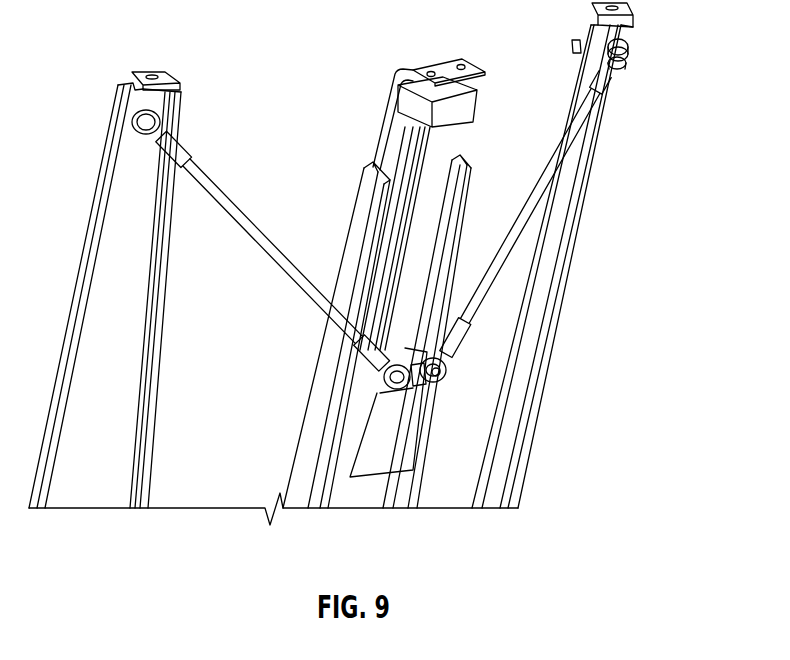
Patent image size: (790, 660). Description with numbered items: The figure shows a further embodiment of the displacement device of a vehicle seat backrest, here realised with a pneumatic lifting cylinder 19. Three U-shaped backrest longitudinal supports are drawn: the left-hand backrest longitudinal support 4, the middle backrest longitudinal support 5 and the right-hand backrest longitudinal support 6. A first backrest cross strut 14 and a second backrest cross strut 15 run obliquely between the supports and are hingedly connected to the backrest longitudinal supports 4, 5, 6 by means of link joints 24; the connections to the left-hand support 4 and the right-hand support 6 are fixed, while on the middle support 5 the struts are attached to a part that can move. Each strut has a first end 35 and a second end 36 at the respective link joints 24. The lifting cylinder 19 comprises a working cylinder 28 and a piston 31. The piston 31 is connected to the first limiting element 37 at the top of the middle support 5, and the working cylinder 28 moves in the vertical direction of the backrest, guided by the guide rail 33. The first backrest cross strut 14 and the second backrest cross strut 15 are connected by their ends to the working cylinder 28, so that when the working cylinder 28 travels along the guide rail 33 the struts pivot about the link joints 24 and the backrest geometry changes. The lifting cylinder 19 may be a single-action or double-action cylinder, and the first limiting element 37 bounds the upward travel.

The left-hand backrest longitudinal support 4 is at (582, 177).
The middle backrest longitudinal support 5 is at (368, 193).
The right-hand backrest longitudinal support 6 is at (113, 345).
The first backrest cross strut 14 is at (550, 162).
The second backrest cross strut 15 is at (215, 183).
The lifting cylinder 19 is at (447, 386).
The link joint 24 is at (153, 123).
The working cylinder 28 is at (402, 457).
The piston 31 is at (425, 197).
The guide rail 33 is at (397, 125).
The first end 35 is at (608, 72).
The second end 36 is at (383, 363).
The first limiting element 37 is at (470, 100).